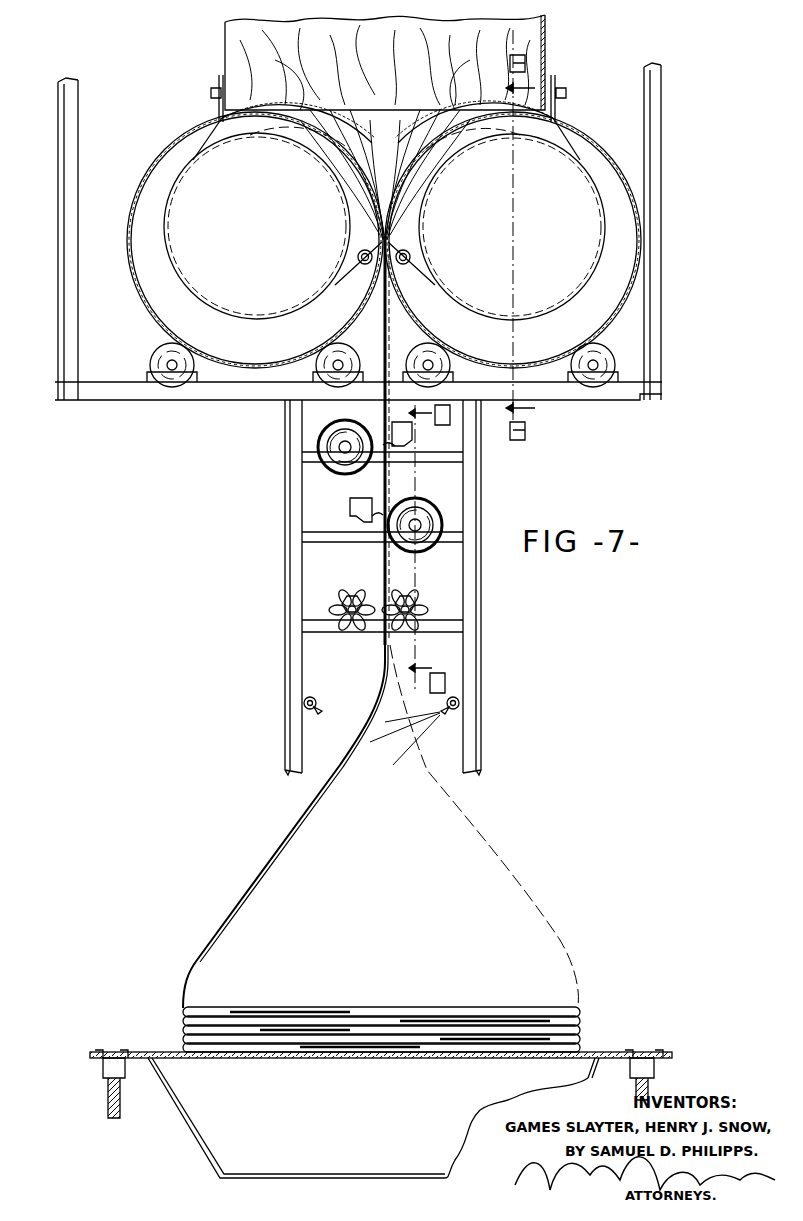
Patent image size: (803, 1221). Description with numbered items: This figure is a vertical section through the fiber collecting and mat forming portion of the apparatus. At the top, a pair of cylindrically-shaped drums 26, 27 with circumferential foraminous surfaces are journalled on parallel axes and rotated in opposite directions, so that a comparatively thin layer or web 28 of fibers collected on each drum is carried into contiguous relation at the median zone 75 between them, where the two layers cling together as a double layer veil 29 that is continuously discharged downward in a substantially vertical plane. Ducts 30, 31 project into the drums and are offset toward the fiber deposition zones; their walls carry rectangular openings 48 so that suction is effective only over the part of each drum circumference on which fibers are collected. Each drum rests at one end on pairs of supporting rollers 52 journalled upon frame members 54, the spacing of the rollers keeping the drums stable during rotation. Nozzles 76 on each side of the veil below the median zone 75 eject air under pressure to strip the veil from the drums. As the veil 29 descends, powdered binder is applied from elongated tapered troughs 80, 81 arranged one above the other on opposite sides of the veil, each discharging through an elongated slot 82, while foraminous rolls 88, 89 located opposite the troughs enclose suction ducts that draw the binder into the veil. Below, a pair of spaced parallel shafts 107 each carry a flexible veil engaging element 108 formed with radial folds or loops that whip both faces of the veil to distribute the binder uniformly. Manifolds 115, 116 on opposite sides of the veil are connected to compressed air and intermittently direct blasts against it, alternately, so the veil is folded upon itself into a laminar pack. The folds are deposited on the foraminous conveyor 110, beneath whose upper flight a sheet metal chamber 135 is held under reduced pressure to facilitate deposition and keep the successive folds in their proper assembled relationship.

The drum 26 is at (637, 305).
The drum 27 is at (131, 292).
The layer or web of fibers 28 is at (355, 152).
The veil or fibrous strip 29 is at (380, 314).
The duct 30 is at (205, 303).
The duct 31 is at (540, 315).
The rectangular openings 48 is at (225, 118).
The supporting rollers 52 is at (150, 356).
The frame members 54 is at (614, 396).
The median zone 75 is at (378, 241).
The nozzles 76 is at (368, 265).
The trough 80 is at (410, 442).
The trough 81 is at (352, 516).
The slot or opening 82 is at (383, 442).
The roll 88 is at (440, 520).
The roll 89 is at (318, 447).
The shafts 107 is at (420, 609).
The veil engaging elements 108 is at (358, 598).
The conveyor 110 is at (607, 1052).
The manifold or pipe 115 is at (460, 700).
The manifold or pipe 116 is at (304, 700).
The chamber 135 is at (205, 1140).